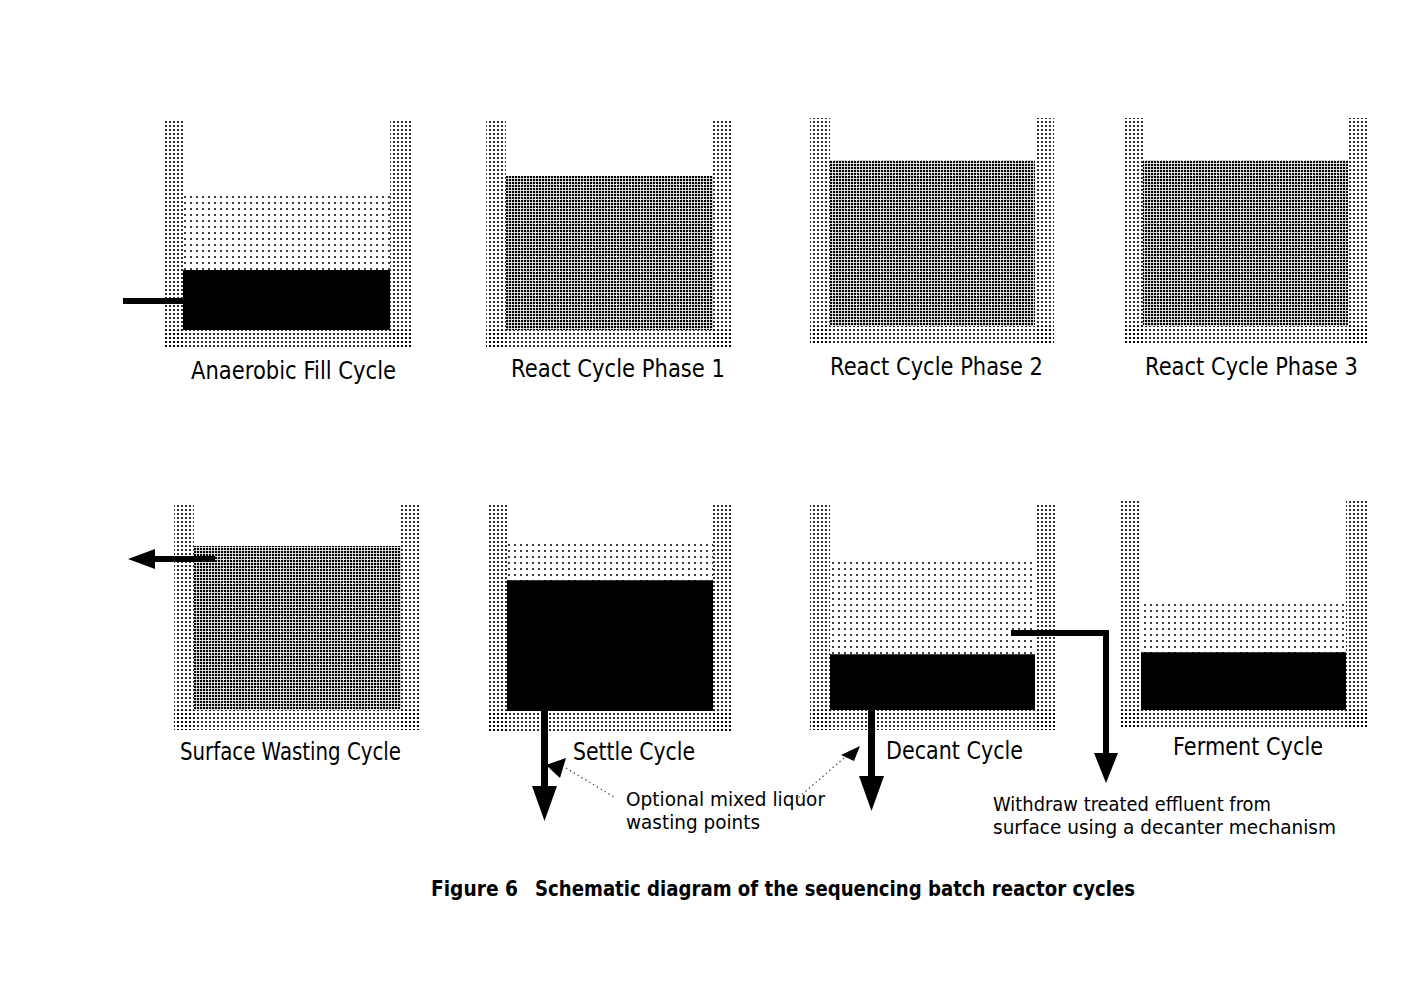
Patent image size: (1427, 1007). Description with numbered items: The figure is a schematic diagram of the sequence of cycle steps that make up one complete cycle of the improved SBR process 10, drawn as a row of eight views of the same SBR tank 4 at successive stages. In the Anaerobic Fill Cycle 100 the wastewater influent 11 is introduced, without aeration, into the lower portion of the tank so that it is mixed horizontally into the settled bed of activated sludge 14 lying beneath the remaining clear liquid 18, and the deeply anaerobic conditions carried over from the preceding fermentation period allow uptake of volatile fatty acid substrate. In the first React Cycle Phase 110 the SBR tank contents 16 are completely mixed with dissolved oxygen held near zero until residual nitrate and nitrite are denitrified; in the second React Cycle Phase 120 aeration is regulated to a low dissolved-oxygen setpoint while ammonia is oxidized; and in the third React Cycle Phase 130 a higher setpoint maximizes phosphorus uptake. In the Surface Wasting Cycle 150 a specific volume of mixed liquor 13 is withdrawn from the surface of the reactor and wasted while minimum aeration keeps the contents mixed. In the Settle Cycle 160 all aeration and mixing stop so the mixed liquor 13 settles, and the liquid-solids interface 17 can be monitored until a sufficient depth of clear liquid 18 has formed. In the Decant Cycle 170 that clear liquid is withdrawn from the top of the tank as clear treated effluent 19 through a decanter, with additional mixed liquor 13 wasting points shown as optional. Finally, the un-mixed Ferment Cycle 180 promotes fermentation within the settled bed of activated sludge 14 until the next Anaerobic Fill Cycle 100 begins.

The improved SBR process 10 is at (294, 37).
The SBR tank 4 is at (167, 163).
The wastewater influent 11 is at (145, 290).
The mixed liquor 13 is at (160, 545).
The settled bed of activated sludge 14 is at (188, 312).
The SBR tank contents 16 is at (578, 170).
The liquid-solids interface 17 is at (507, 575).
The clear liquid 18 is at (238, 198).
The clear treated effluent 19 is at (1095, 620).
The Anaerobic Fill Cycle 100 is at (406, 346).
The React Cycle Phase 1 110 is at (732, 343).
The React Cycle Phase 2 120 is at (1057, 343).
The React Cycle Phase 3 130 is at (1372, 343).
The Surface Wasting Cycle 150 is at (407, 728).
The Settle Cycle 160 is at (741, 705).
The Decant Cycle 170 is at (1057, 718).
The Ferment Cycle 180 is at (1367, 723).